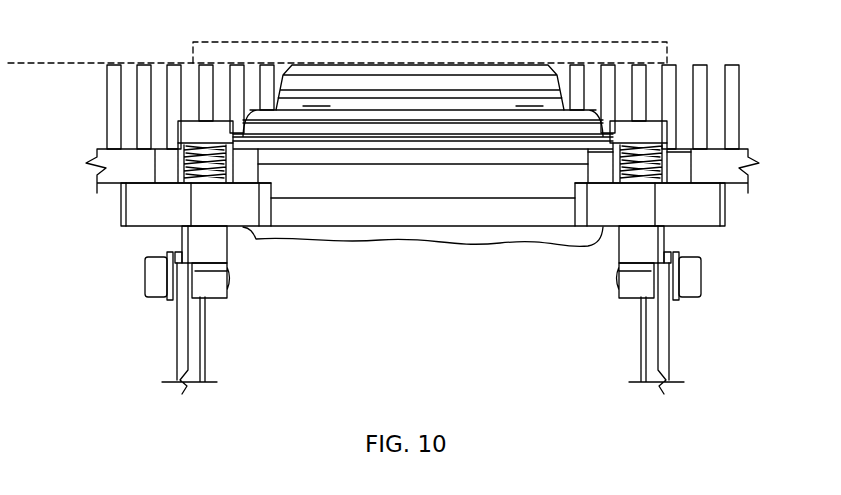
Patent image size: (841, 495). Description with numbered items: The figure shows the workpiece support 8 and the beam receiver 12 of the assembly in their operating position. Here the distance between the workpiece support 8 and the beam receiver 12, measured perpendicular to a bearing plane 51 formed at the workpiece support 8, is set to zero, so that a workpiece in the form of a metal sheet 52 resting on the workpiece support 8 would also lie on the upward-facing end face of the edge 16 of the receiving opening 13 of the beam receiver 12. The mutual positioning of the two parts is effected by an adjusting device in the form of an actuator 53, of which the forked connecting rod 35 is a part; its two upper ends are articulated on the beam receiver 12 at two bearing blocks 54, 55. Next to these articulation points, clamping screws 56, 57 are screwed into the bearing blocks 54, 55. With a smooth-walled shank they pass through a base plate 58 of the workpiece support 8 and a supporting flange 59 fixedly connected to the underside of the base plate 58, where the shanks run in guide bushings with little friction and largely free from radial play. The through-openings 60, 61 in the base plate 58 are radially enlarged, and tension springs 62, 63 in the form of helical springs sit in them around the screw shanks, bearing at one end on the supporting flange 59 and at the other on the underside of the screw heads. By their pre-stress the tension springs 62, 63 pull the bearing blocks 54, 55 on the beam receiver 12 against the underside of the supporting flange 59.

The workpiece support 8 is at (97, 75).
The beam receiver 12 is at (433, 216).
The receiving opening 13 is at (427, 63).
The edge of the receiving opening 16 is at (312, 67).
The forked connecting rod 35 is at (198, 361).
The bearing plane 51 is at (38, 66).
The metal sheet 52 is at (219, 44).
The actuator 53 is at (119, 247).
The bearing block 54 is at (236, 303).
The bearing block 55 is at (606, 304).
The clamping screw 56 is at (185, 133).
The clamping screw 57 is at (663, 132).
The base plate 58 is at (760, 165).
The supporting flange 59 is at (706, 222).
The through-opening 60 is at (182, 172).
The through-opening 61 is at (665, 172).
The tension spring 62 is at (182, 163).
The tension spring 63 is at (665, 170).